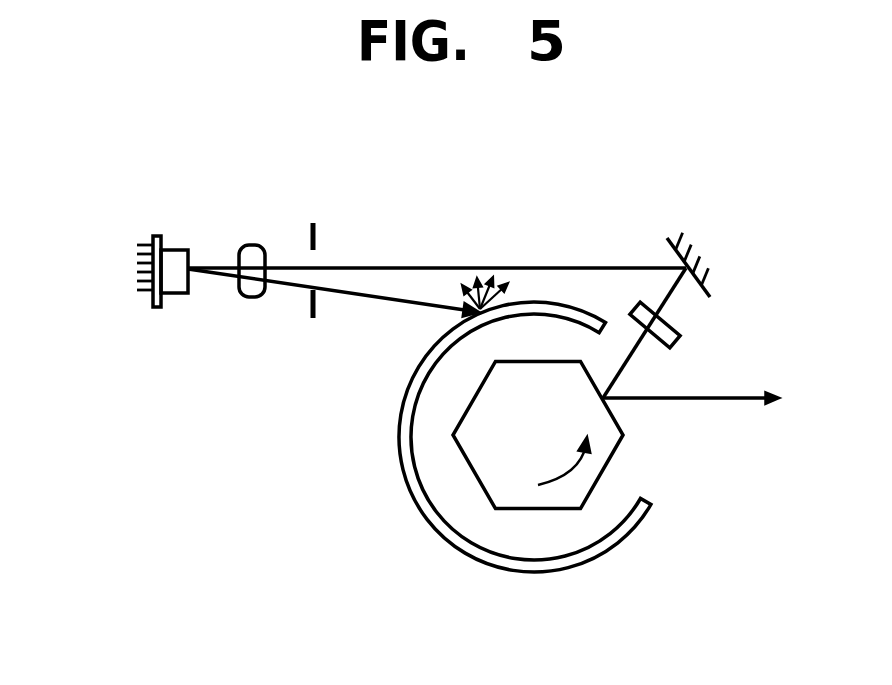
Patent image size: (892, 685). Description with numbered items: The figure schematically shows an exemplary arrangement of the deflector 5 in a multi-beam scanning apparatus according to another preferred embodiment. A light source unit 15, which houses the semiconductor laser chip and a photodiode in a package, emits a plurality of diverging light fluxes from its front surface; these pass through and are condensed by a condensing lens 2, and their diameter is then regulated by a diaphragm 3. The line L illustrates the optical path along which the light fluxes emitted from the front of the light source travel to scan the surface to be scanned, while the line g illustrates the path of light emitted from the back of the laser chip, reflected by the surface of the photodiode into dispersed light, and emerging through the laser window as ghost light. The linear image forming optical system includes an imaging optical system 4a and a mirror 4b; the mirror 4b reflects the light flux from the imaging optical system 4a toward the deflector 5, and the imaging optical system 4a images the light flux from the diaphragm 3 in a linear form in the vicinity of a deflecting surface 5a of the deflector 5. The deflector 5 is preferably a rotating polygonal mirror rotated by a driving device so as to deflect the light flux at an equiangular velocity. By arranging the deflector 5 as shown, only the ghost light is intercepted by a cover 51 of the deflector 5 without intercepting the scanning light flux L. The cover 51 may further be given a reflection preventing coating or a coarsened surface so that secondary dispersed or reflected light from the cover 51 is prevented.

The light source unit 15 is at (172, 246).
The condensing lens 2 is at (251, 245).
The diaphragm 3 is at (317, 228).
The scanning light flux optical path L is at (440, 268).
The ghost light path g is at (363, 298).
The mirror 4b is at (690, 244).
The imaging optical system 4a is at (683, 333).
The deflector 5 is at (500, 497).
The deflecting surface 5a is at (608, 463).
The cover 51 is at (617, 548).